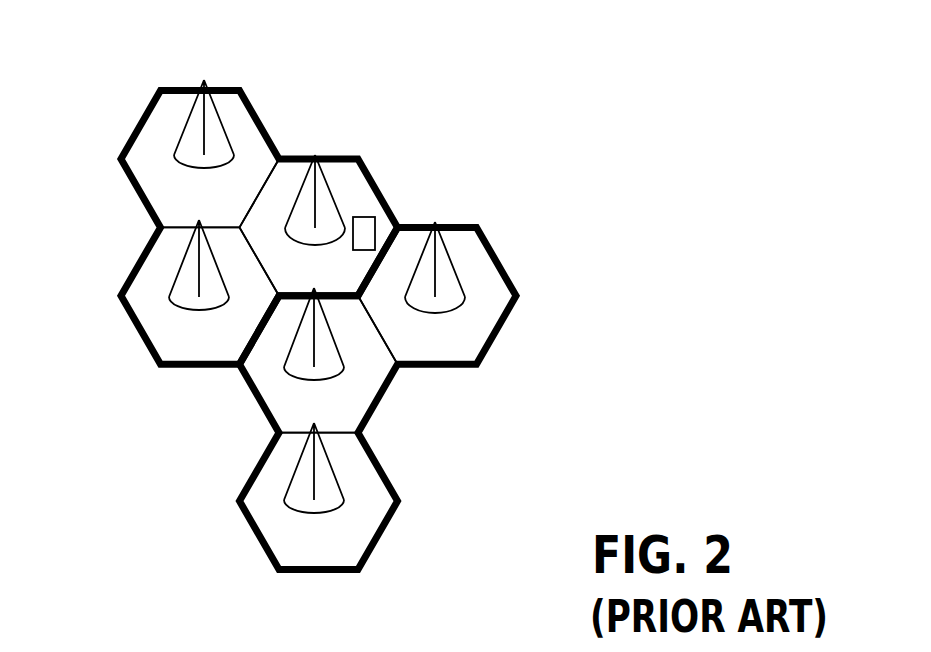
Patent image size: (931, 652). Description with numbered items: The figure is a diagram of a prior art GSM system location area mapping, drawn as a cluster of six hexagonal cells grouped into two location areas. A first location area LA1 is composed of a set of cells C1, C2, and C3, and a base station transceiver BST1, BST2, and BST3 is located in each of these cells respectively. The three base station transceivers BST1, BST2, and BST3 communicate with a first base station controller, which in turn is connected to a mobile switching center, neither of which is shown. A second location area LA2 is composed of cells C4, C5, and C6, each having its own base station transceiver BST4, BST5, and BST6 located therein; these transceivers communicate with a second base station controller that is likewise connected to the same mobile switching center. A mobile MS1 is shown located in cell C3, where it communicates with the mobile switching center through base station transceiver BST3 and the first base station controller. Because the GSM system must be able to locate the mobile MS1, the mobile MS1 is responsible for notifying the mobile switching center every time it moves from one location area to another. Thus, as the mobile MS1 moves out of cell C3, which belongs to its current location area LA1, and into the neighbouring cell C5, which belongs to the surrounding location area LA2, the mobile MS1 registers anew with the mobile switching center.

The cell C1 is at (157, 127).
The cell C2 is at (141, 257).
The cell C3 is at (367, 167).
The cell C4 is at (504, 269).
The cell C5 is at (381, 408).
The cell C6 is at (383, 537).
The location area LA1 is at (253, 100).
The location area LA2 is at (478, 228).
The base station transceiver BST1 is at (206, 78).
The base station transceiver BST2 is at (171, 300).
The base station transceiver BST3 is at (375, 128).
The base station transceiver BST4 is at (466, 303).
The base station transceiver BST5 is at (285, 369).
The base station transceiver BST6 is at (284, 502).
The mobile MS1 is at (376, 235).